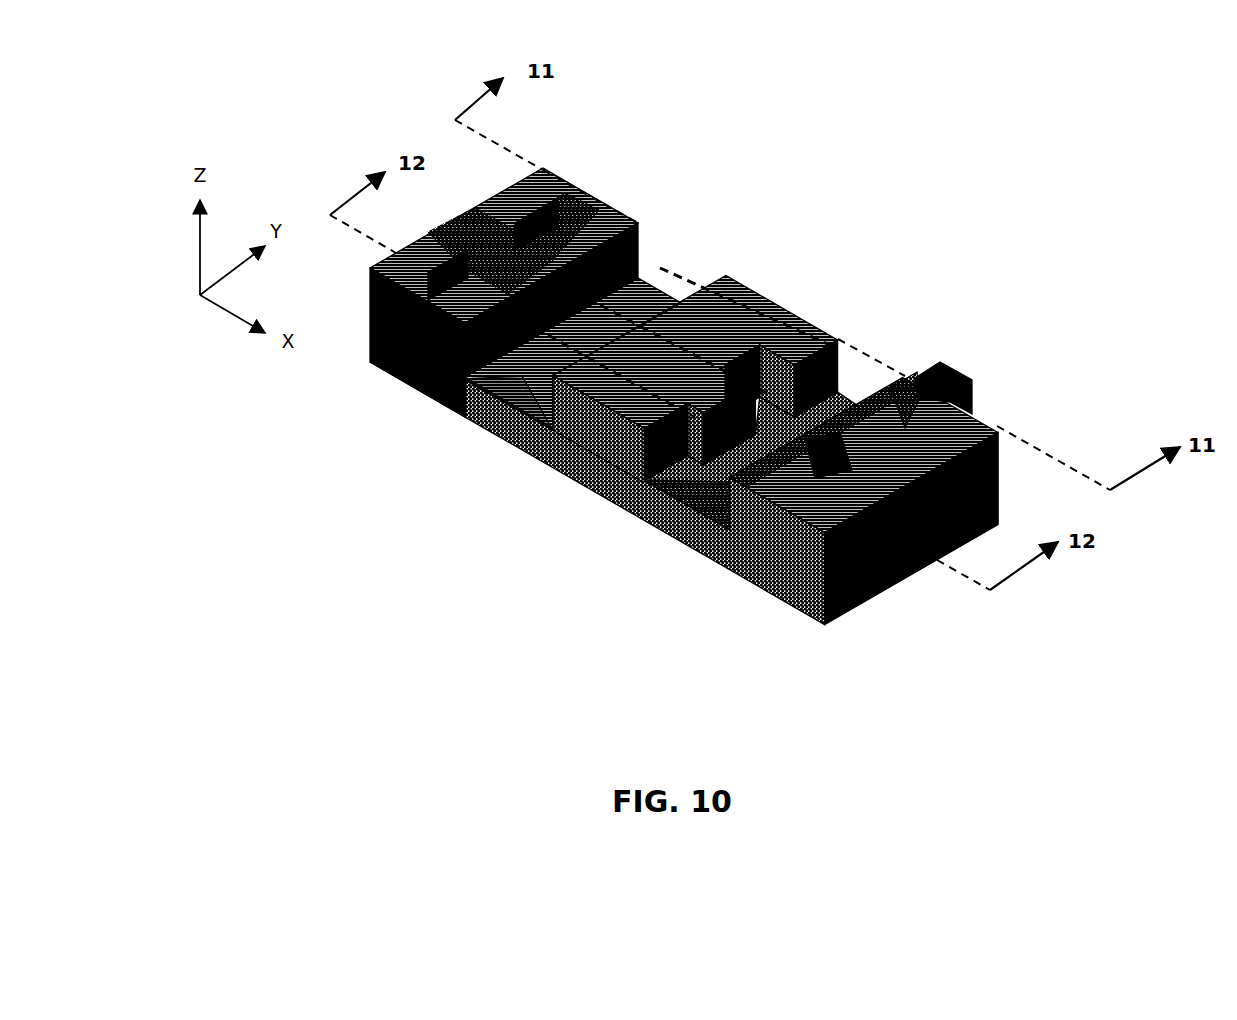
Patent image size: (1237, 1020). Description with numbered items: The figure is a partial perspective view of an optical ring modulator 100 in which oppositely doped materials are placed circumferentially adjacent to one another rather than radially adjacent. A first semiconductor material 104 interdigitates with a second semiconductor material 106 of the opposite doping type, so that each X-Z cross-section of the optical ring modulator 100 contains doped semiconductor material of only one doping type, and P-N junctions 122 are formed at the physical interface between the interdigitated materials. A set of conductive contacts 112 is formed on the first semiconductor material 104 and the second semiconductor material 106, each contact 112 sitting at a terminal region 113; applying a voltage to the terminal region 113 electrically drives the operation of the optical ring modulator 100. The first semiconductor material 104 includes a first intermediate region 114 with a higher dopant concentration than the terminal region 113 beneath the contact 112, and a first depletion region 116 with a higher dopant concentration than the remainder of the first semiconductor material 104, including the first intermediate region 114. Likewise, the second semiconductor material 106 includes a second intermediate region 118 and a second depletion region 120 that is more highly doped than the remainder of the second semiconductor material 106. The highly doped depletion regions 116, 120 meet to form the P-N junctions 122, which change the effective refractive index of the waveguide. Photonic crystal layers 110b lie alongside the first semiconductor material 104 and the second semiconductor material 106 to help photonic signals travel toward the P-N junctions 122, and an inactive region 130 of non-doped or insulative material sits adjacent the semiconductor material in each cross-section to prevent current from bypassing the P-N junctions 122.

The optical ring modulator 100 is at (670, 363).
The first semiconductor material 104 is at (473, 204).
The second semiconductor material 106 is at (1000, 494).
The photonic crystal layer 110b is at (505, 383).
The conductive contact 112 is at (535, 182).
The terminal region 113 is at (420, 360).
The first intermediate region 114 is at (515, 424).
The first depletion region 116 is at (586, 466).
The second intermediate region 118 is at (840, 392).
The second depletion region 120 is at (773, 320).
The P-N junction 122 is at (645, 368).
The inactive region 130 is at (787, 573).